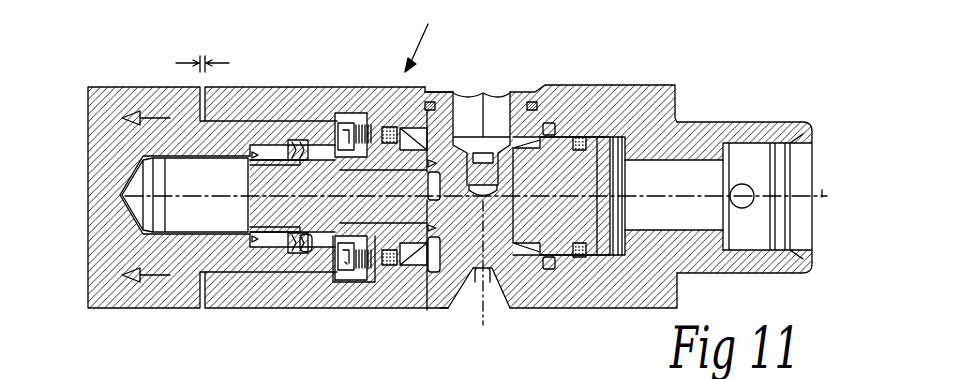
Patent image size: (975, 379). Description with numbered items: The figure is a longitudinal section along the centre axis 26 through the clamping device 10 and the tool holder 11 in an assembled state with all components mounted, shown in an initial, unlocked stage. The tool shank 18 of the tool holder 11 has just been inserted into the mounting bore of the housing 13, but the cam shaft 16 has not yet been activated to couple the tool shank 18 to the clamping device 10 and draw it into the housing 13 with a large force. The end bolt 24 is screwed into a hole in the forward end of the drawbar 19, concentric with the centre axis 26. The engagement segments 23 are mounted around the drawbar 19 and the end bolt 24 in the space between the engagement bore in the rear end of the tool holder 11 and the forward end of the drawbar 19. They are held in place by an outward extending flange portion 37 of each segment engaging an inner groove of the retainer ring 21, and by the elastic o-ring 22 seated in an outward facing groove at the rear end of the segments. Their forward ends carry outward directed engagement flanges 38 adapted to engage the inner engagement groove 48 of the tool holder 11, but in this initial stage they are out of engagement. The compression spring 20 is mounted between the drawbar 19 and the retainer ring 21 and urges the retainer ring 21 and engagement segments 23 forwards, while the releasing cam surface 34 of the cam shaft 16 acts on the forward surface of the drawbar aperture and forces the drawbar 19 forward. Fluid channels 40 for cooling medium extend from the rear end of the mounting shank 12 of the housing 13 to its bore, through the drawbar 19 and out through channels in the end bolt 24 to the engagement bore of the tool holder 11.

The clamping device 10 is at (426, 36).
The tool holder 11 is at (105, 107).
The mounting shank 12 is at (748, 130).
The housing 13 is at (607, 97).
The cam shaft 16 is at (520, 117).
The tool shank 18 is at (247, 132).
The drawbar 19 is at (578, 228).
The compression spring 20 is at (360, 262).
The retainer ring 21 is at (347, 263).
The o-ring 22 is at (355, 158).
The engagement segments 23 is at (318, 157).
The end bolt 24 is at (398, 205).
The centre axis 26 is at (822, 197).
The releasing cam surface 34 is at (432, 242).
The flange portion 37 is at (312, 238).
The engagement flanges 38 is at (313, 256).
The fluid channels 40 is at (250, 222).
The engagement groove 48 is at (291, 147).